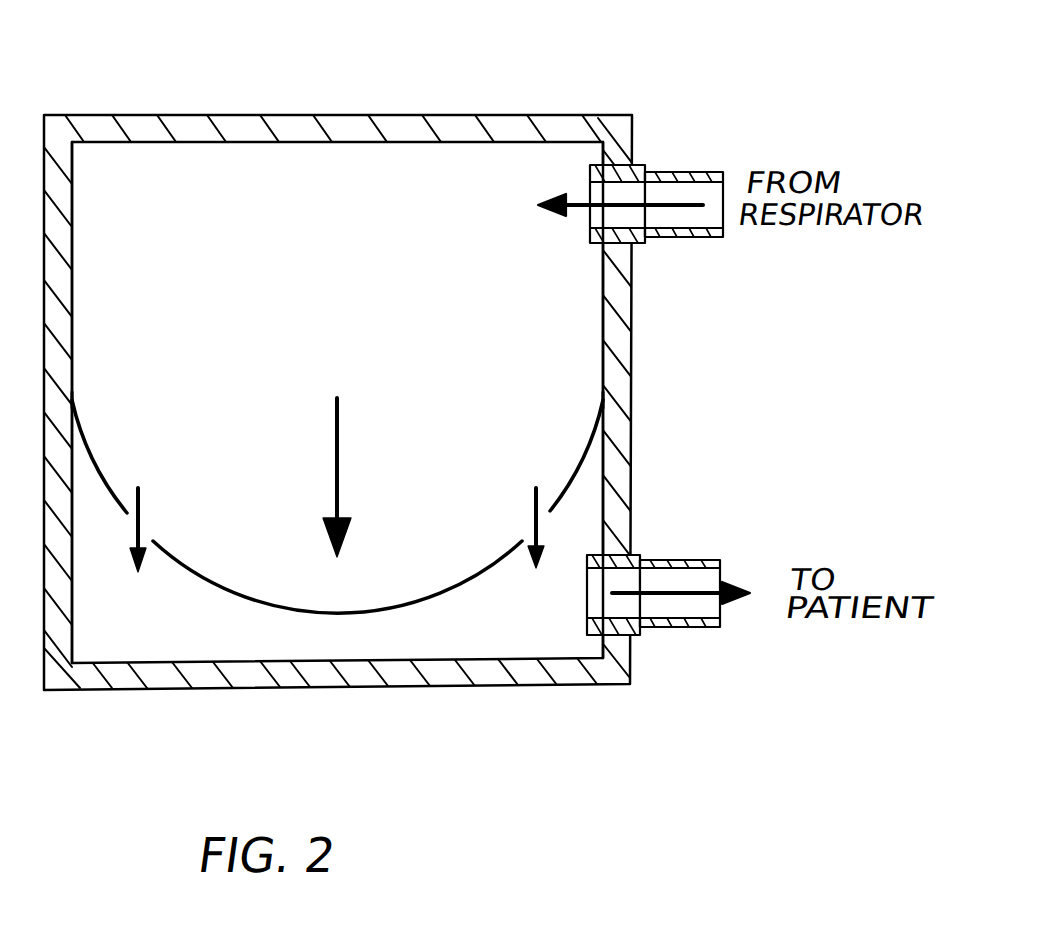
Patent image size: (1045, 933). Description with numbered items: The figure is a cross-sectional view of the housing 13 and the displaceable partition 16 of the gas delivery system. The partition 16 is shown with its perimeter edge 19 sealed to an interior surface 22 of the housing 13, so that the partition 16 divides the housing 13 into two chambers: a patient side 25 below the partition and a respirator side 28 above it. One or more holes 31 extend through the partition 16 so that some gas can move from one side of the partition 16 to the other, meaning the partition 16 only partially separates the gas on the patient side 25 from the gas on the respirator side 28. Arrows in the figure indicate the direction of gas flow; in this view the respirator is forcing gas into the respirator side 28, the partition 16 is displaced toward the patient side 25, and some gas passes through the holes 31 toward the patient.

The housing 13 is at (522, 115).
The displaceable partition 16 is at (462, 582).
The perimeter edge 19 is at (100, 390).
The interior surface 22 is at (75, 288).
The patient side chamber 25 is at (205, 636).
The respirator side chamber 28 is at (258, 226).
The holes 31 is at (148, 528).